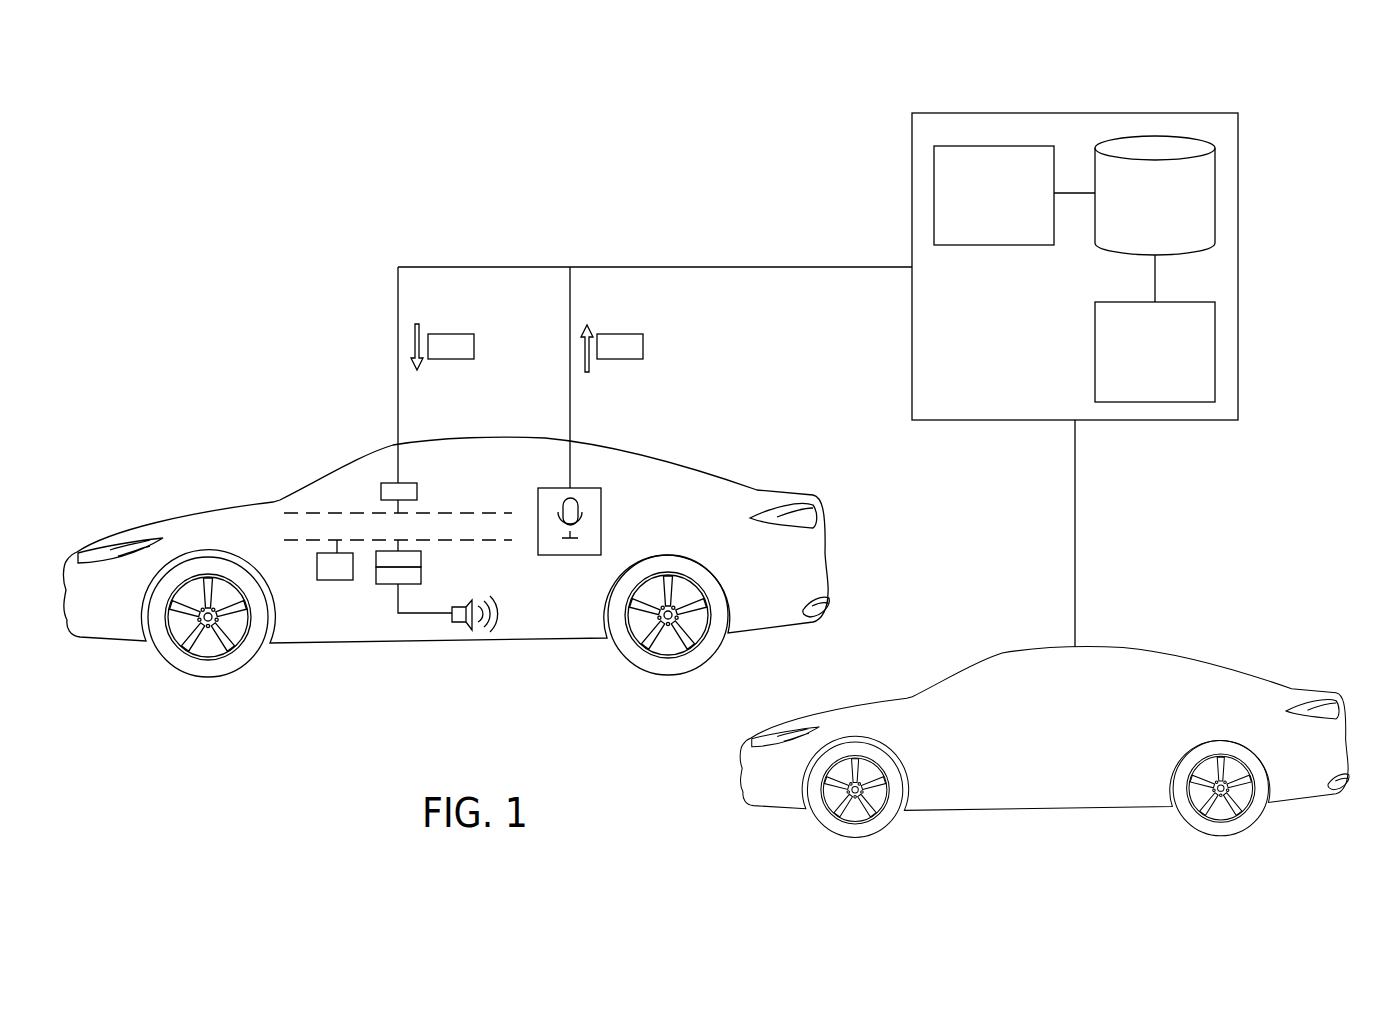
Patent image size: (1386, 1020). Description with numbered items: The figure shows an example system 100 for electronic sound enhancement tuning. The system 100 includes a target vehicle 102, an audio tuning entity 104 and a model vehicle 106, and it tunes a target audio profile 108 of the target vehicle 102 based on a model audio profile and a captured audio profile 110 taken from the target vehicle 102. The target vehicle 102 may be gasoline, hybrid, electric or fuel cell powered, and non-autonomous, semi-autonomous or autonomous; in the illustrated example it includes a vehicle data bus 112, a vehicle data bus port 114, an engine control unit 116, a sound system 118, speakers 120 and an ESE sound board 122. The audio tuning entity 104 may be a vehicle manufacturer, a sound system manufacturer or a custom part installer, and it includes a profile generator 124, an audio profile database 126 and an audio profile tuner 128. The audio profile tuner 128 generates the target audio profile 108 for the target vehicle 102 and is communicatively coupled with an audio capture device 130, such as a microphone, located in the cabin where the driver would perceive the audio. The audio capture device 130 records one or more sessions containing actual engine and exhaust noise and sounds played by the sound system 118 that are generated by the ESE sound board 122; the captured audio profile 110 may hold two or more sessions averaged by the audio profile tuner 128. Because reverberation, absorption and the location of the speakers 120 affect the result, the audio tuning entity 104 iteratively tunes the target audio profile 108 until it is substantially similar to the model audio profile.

The system 100 is at (728, 172).
The target vehicle 102 is at (790, 490).
The audio tuning entity 104 is at (1212, 113).
The model vehicle 106 is at (1317, 688).
The target audio profile 108 is at (474, 346).
The captured audio profile 110 is at (643, 346).
The vehicle data bus 112 is at (465, 512).
The vehicle data bus port 114 is at (417, 492).
The engine control unit 116 is at (337, 580).
The sound system 118 is at (421, 576).
The speakers 120 is at (458, 626).
The ESE sound board 122 is at (421, 558).
The profile generator 124 is at (1238, 352).
The audio profile database 126 is at (1238, 193).
The audio profile tuner 128 is at (995, 245).
The audio capture device 130 is at (601, 520).